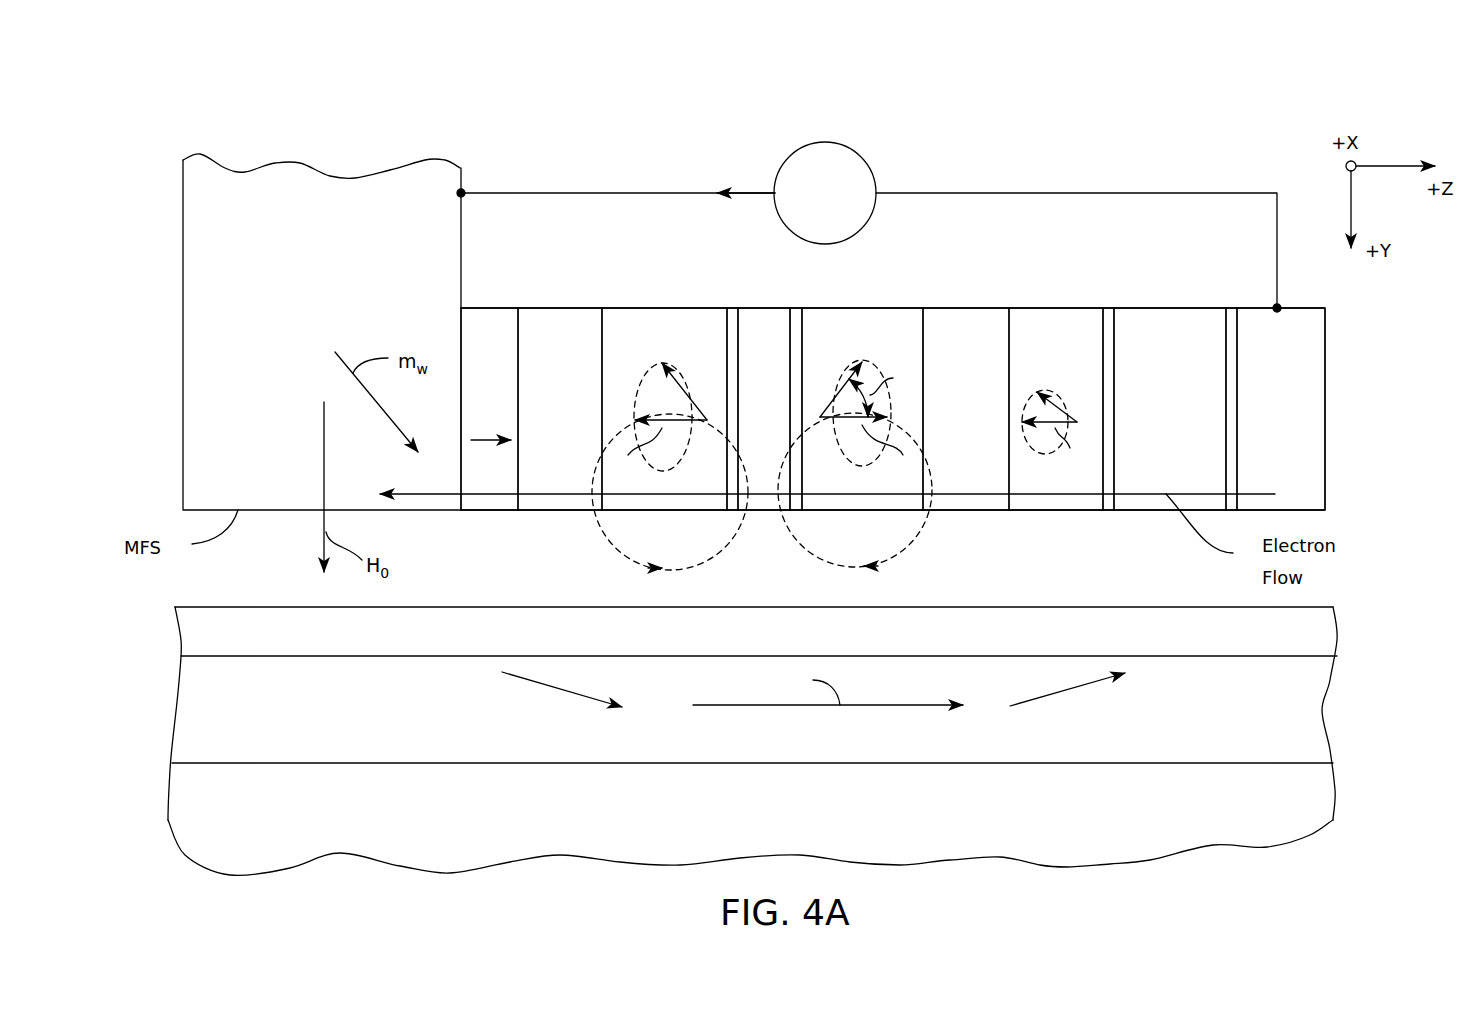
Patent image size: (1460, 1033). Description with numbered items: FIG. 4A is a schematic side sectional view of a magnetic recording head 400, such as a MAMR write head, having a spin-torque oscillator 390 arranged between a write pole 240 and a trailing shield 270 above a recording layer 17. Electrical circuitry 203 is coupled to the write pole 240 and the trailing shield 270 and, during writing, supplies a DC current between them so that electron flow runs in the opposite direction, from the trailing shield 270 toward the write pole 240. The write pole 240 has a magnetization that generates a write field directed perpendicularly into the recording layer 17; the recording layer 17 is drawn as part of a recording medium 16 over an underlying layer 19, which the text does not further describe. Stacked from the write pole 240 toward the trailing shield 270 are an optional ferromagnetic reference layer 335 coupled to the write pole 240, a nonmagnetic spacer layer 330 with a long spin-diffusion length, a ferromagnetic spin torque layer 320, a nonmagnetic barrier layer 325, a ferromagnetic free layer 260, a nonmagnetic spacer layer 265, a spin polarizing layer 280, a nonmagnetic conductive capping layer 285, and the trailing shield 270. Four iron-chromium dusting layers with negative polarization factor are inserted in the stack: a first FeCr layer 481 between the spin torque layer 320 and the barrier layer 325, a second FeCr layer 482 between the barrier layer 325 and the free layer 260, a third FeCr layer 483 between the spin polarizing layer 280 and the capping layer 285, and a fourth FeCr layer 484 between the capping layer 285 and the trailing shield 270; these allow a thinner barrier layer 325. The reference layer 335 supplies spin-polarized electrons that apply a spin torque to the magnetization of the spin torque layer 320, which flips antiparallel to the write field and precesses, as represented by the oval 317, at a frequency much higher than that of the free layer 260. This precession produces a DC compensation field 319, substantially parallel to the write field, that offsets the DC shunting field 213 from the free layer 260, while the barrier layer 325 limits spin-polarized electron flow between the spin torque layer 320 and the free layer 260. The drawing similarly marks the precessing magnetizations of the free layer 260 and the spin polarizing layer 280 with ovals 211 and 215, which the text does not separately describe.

The magnetic recording head 400 is at (185, 88).
The write pole 240 is at (203, 298).
The reference layer 335 is at (480, 308).
The nonmagnetic spacer layer 330 is at (575, 308).
The spin torque layer 320 is at (657, 308).
The barrier layer 325 is at (762, 308).
The first FeCr layer 481 is at (733, 318).
The second FeCr layer 482 is at (797, 318).
The free layer 260 is at (858, 308).
The nonmagnetic spacer layer 265 is at (965, 308).
The spin polarizing layer 280 is at (1058, 308).
The third FeCr layer 483 is at (1108, 318).
The capping layer 285 is at (1178, 308).
The fourth FeCr layer 484 is at (1232, 318).
The trailing shield 270 is at (1300, 308).
The spin-torque oscillator 390 is at (1110, 130).
The electrical circuitry 203 is at (884, 171).
The oval 317 is at (672, 470).
The DC field 319 is at (617, 543).
The free layer magnetization 211 is at (850, 468).
The DC shunting field 213 is at (912, 540).
The SPL magnetization 215 is at (1030, 448).
The recording layer 17 is at (1300, 632).
The soft underlayer (SUL) 19 is at (1305, 705).
The magnetic recording medium 16 is at (168, 875).